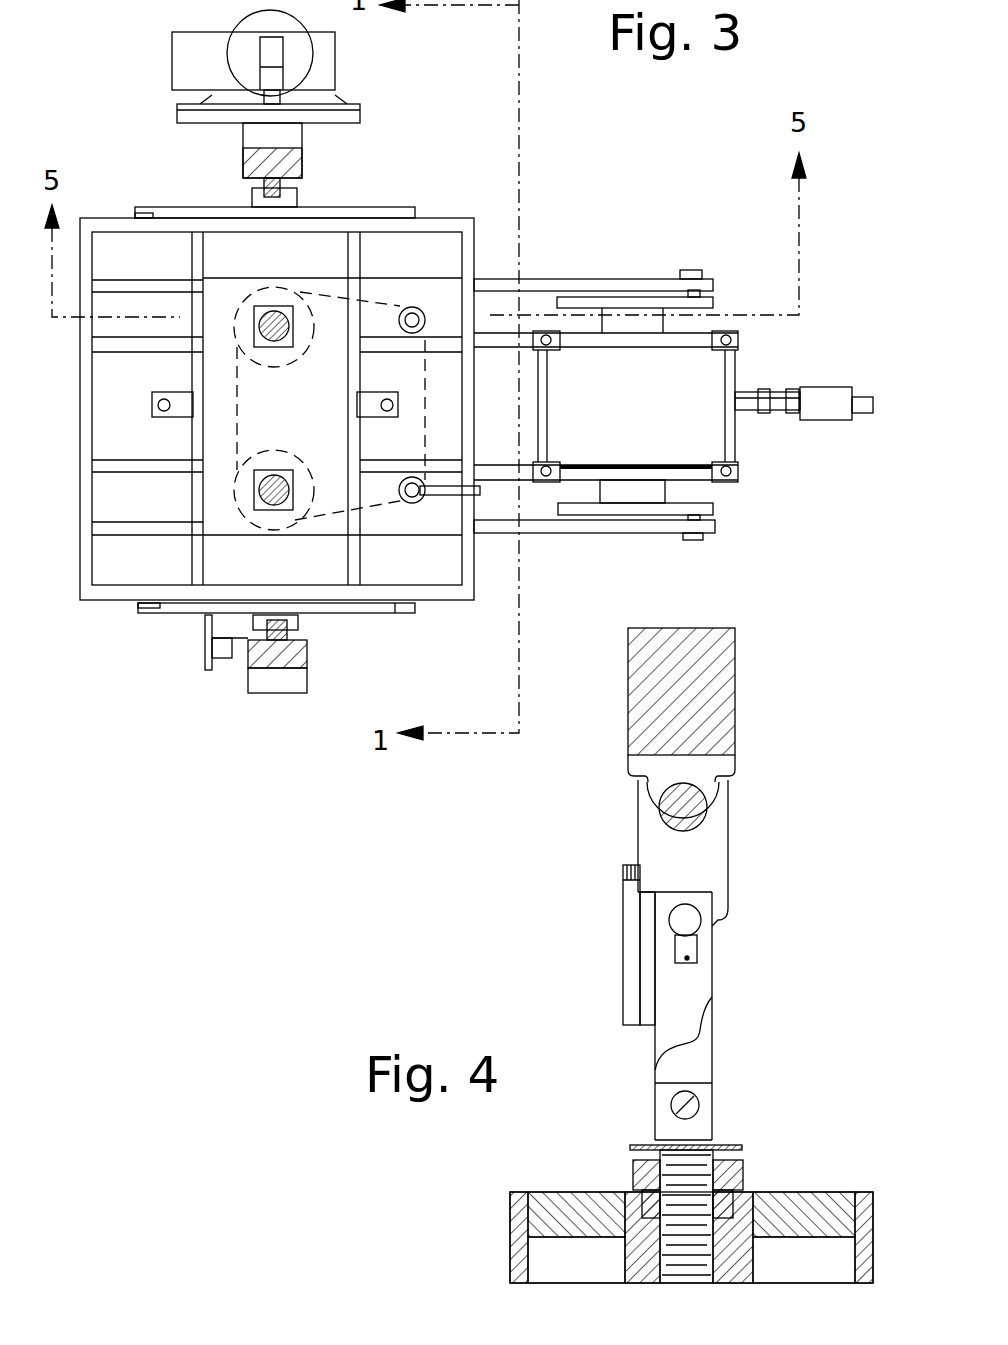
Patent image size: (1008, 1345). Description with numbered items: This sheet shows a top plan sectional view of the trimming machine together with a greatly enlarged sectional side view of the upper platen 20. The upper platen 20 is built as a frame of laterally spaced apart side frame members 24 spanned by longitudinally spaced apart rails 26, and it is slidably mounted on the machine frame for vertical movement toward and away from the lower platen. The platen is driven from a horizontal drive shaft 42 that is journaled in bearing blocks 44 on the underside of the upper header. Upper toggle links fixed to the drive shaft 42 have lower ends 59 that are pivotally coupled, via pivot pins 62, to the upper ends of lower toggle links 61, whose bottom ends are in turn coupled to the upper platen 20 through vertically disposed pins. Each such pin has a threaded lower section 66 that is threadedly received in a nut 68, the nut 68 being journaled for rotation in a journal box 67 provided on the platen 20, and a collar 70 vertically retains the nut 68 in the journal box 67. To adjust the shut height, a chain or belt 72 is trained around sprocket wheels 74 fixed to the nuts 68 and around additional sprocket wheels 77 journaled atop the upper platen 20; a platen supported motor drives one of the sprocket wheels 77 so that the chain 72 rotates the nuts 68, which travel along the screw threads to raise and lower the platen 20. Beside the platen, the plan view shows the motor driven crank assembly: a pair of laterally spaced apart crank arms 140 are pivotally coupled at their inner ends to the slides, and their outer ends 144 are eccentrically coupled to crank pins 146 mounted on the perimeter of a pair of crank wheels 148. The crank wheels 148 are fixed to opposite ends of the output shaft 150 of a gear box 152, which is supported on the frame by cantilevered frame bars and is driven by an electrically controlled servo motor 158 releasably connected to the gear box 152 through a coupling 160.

In FIG. 4, the upper platen 20 is at (510, 1223).
In FIG. 3, the side frame members 24 is at (427, 593).
In FIG. 3, the rails 26 is at (480, 518).
In FIG. 4, the drive shaft 42 is at (697, 812).
In FIG. 4, the bearing blocks 44 is at (630, 772).
In FIG. 4, the lower ends 59 is at (728, 918).
In FIG. 4, the lower toggle links 61 is at (698, 985).
In FIG. 4, the pivot pins 62 is at (692, 920).
In FIG. 4, the threaded lower sections 66 is at (740, 1162).
In FIG. 4, the journal boxes 67 is at (747, 1180).
In FIG. 4, the nuts 68 is at (633, 1180).
In FIG. 4, the collar 70 is at (633, 1162).
In FIG. 3, the chain or belt 72 is at (362, 300).
In FIG. 3, the sprocket wheels 74 is at (305, 490).
In FIG. 4, the sprocket wheels 74 is at (697, 1187).
In FIG. 3, the additional sprocket wheels 77 is at (412, 310).
In FIG. 3, the crank arms 140 is at (624, 282).
In FIG. 3, the outer ends 144 is at (717, 512).
In FIG. 3, the crank pins 146 is at (705, 538).
In FIG. 3, the crank wheels 148 is at (713, 300).
In FIG. 3, the output shaft 150 is at (650, 325).
In FIG. 3, the gear box 152 is at (712, 428).
In FIG. 3, the servo motor 158 is at (832, 385).
In FIG. 3, the coupling 160 is at (777, 390).